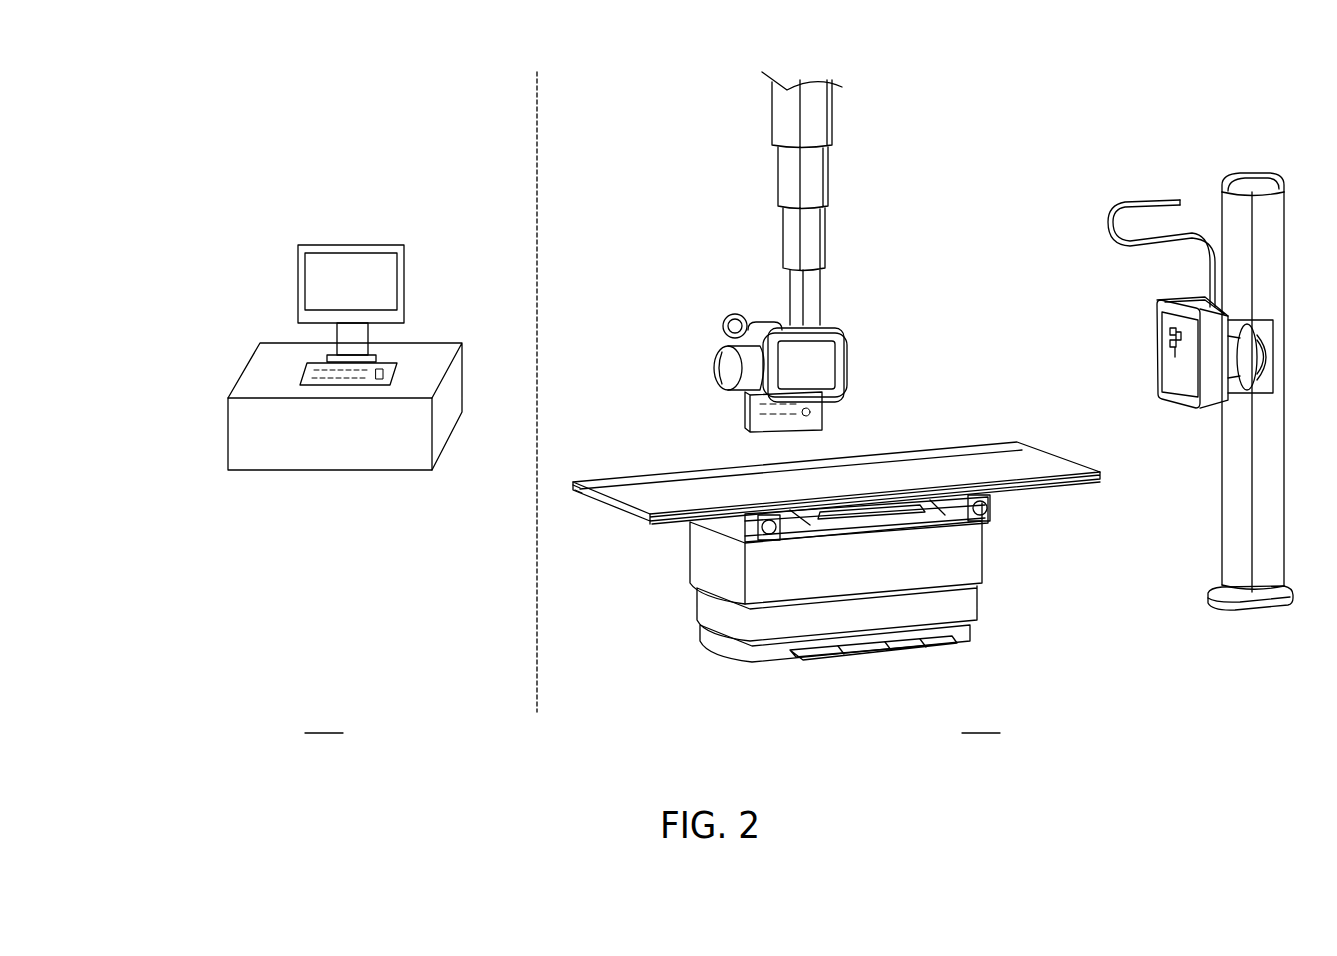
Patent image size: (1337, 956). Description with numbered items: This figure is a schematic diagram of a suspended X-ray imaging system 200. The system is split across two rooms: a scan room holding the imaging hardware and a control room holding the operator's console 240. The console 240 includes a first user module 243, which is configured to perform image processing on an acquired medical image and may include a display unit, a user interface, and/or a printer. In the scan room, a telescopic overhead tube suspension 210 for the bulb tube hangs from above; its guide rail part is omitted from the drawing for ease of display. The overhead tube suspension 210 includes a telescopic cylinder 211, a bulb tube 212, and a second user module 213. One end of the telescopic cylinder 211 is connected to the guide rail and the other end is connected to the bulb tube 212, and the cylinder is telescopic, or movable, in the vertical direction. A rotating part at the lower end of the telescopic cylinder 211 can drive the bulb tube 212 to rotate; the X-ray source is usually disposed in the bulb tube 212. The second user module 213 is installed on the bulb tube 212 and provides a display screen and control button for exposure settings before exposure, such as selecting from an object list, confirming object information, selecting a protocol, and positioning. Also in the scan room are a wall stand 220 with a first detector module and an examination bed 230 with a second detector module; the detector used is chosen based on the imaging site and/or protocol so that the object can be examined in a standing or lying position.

The suspended X-ray imaging system 200 is at (340, 72).
The telescopic overhead tube suspension for bulb tube 210 is at (735, 200).
The telescopic cylinder 211 is at (812, 251).
The bulb tube 212 is at (718, 343).
The second user module 213 is at (820, 372).
The wall stand 220 is at (1152, 158).
The examination bed 230 is at (676, 460).
The console 240 is at (262, 258).
The first user module 243 is at (373, 289).